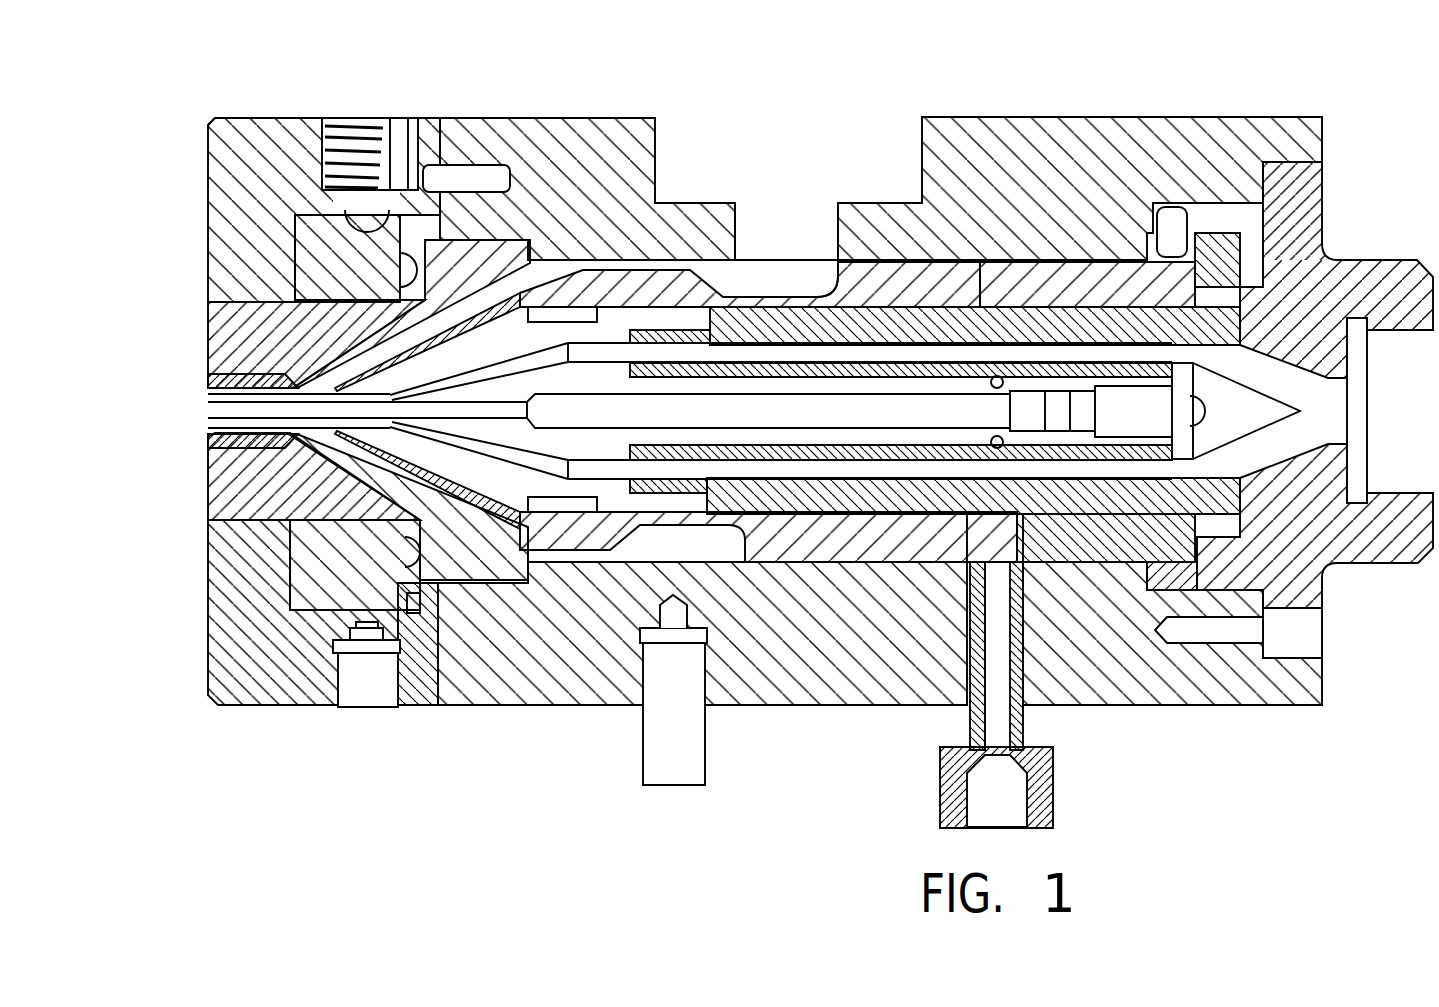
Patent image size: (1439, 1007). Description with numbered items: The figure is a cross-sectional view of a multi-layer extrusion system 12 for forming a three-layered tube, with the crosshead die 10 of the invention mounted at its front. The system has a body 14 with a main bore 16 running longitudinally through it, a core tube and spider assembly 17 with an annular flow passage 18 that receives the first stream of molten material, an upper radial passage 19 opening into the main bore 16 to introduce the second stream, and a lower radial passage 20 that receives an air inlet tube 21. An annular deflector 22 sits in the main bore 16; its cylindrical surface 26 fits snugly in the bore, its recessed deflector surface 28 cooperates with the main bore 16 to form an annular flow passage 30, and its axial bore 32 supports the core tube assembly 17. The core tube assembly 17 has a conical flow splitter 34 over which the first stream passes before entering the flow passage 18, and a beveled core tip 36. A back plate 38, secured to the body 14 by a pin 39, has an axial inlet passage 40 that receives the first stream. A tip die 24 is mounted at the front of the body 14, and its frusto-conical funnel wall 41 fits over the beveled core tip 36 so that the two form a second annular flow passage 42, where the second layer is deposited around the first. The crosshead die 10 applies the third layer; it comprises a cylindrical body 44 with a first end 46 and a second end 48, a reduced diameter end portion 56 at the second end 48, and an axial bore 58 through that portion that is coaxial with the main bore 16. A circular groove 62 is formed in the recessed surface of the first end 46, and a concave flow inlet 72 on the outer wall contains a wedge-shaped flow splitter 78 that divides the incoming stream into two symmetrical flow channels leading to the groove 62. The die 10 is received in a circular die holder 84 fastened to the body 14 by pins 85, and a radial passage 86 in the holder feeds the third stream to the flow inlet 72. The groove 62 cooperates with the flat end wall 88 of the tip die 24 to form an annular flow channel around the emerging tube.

The crosshead die 10 is at (207, 462).
The multi-layer extrusion system 12 is at (1252, 86).
The body 14 is at (977, 119).
The main bore 16 is at (700, 272).
The core tube and spider assembly 17 is at (920, 514).
The annular flow passage 18 is at (625, 333).
The upper radial passage 19 is at (838, 232).
The lower radial passage 20 is at (963, 700).
The air inlet tube 21 is at (1022, 712).
The annular deflector 22 is at (1100, 260).
The tip die 24 is at (555, 600).
The cylindrical surface 26 is at (1027, 257).
The recessed deflector surface 28 is at (747, 297).
The annular flow passage 30 is at (555, 260).
The axial bore 32 is at (1108, 515).
The conical flow splitter 34 is at (1318, 420).
The beveled core tip 36 is at (560, 262).
The back plate 38 is at (1328, 258).
The pin 39 is at (1232, 645).
The axial inlet passage 40 is at (1345, 383).
The frusto-conical funnel wall 41 is at (530, 597).
The second annular flow passage 42 is at (484, 290).
The cylindrical body 44 is at (288, 243).
The first end 46 is at (483, 597).
The second end 48 is at (287, 280).
The reduced diameter end portion 56 is at (212, 500).
The axial bore 58 is at (215, 418).
The circular groove 62 is at (300, 345).
The concave flow inlet 72 is at (300, 378).
The wedge-shaped flow splitter 78 is at (283, 180).
The circular die holder 84 is at (208, 640).
The pins 85 is at (455, 163).
The radial passage 86 is at (338, 128).
The flat end wall 88 is at (416, 190).